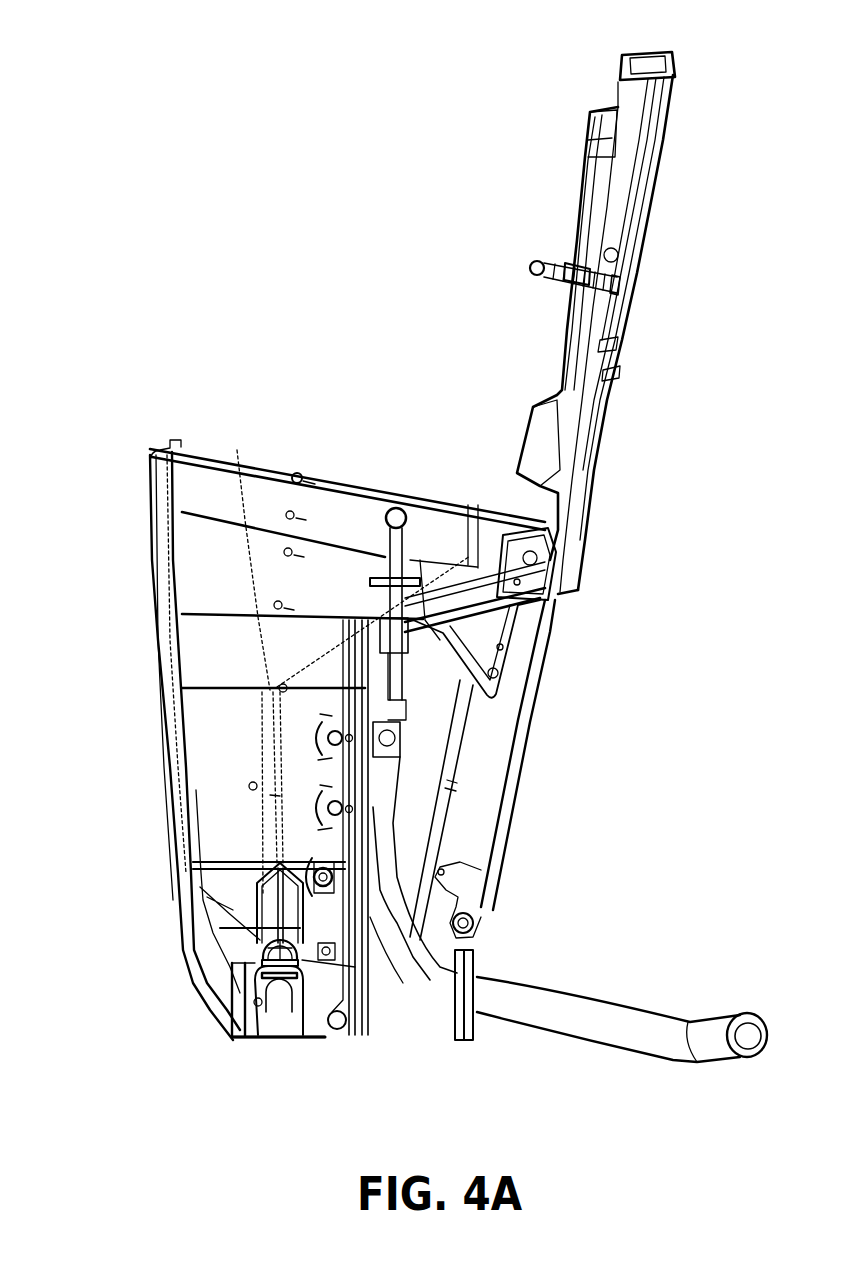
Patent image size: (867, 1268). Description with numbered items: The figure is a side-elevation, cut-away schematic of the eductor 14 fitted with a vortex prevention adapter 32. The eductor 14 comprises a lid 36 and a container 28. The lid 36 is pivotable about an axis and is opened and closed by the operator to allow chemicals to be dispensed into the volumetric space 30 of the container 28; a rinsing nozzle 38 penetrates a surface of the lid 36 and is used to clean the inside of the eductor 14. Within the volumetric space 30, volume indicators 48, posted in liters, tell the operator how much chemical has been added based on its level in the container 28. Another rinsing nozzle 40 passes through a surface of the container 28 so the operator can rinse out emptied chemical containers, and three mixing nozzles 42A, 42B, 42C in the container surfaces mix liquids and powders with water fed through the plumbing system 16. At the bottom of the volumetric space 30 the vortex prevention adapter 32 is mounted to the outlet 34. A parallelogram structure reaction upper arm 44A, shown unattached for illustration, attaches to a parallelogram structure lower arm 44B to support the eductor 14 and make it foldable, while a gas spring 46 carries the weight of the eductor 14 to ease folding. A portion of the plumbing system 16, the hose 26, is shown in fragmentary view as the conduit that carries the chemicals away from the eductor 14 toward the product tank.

The eductor 14 is at (282, 280).
The plumbing system 16 is at (740, 957).
The hose 26 is at (557, 990).
The container 28 is at (173, 538).
The volumetric space 30 is at (232, 486).
The vortex prevention adapter 32 is at (265, 898).
The outlet 34 is at (260, 975).
The lid 36 is at (672, 97).
The rinsing nozzle 38 is at (532, 257).
The rinsing nozzle 40 is at (391, 509).
The mixing nozzle 42A is at (328, 736).
The mixing nozzle 42B is at (331, 801).
The mixing nozzle 42C is at (320, 867).
The parallelogram structure reaction upper arm 44A is at (465, 865).
The parallelogram structure lower arm 44B is at (355, 992).
The gas spring 46 is at (448, 773).
The volume indicators 48 is at (300, 478).